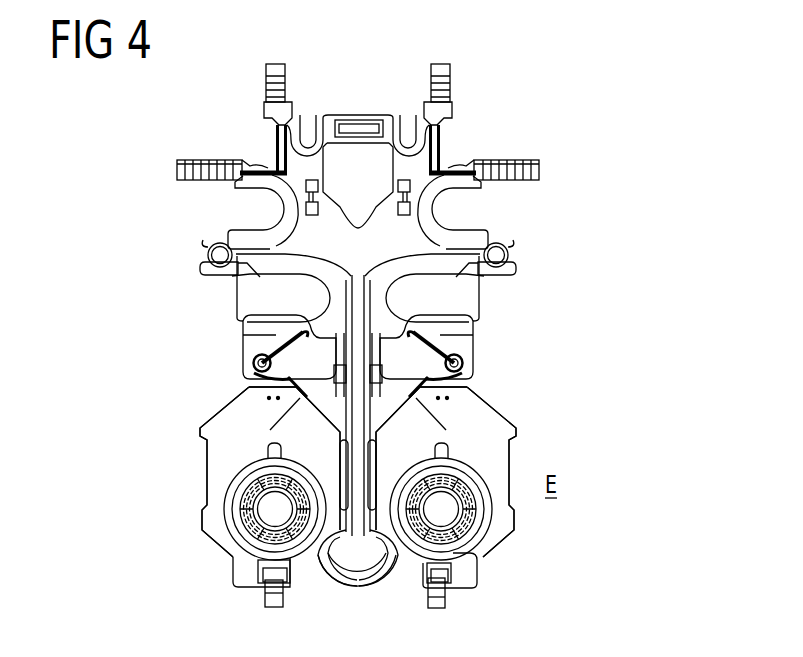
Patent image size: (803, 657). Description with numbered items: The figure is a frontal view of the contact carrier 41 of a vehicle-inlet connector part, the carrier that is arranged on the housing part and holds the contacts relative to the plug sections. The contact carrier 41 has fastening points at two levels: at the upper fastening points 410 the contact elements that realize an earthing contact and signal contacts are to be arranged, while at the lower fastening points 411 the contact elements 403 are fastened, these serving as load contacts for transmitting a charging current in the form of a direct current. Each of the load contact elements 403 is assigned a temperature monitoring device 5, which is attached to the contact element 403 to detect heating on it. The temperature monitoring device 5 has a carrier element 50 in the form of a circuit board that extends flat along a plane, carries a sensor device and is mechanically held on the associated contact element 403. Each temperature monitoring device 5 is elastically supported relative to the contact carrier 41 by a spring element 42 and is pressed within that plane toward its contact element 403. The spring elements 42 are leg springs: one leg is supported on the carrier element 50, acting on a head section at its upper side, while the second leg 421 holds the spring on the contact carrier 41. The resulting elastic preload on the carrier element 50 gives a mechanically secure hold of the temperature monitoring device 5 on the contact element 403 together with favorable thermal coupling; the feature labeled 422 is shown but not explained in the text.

The contact carrier 41 is at (457, 92).
The upper fastening points 410 is at (408, 147).
The spring element 42 is at (265, 350).
The second leg 421 is at (300, 333).
The rib of the cover 422 is at (270, 430).
The temperature monitoring device 5 is at (358, 504).
The carrier element 50 is at (227, 422).
The lower fastening points 411 is at (228, 548).
The contact elements 403 is at (415, 552).